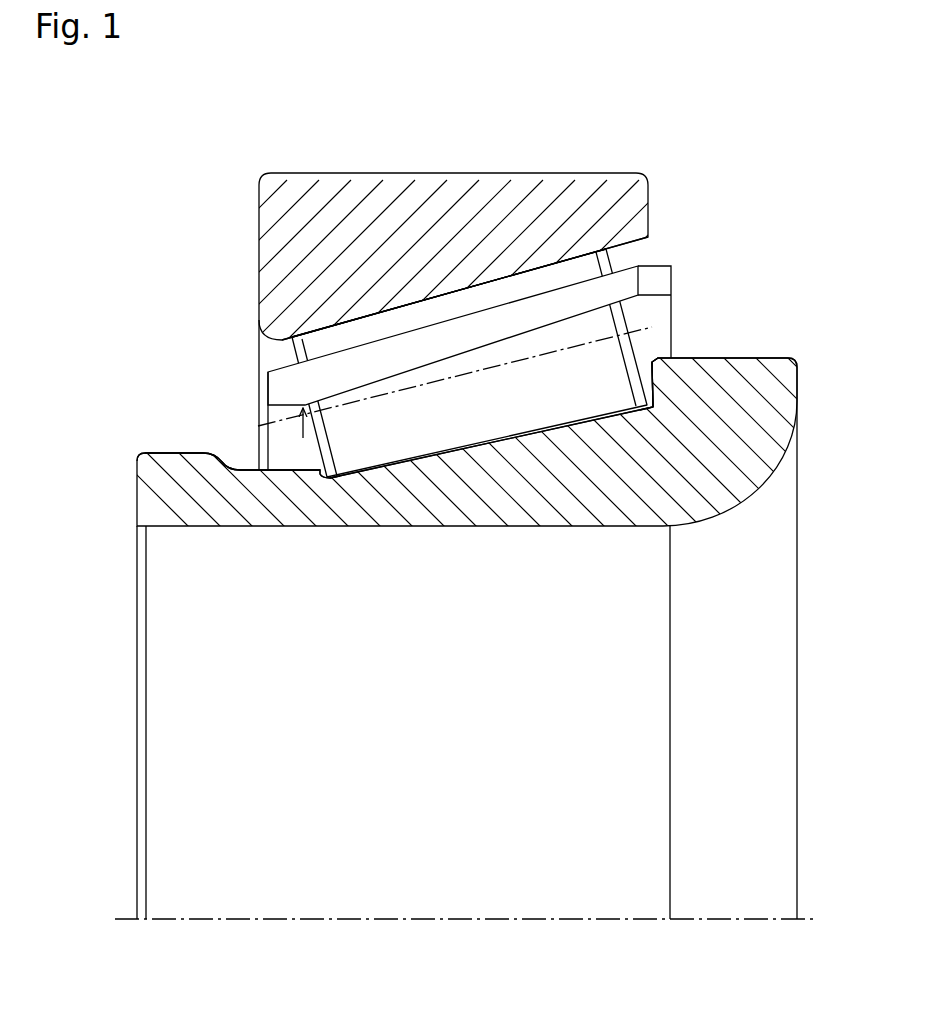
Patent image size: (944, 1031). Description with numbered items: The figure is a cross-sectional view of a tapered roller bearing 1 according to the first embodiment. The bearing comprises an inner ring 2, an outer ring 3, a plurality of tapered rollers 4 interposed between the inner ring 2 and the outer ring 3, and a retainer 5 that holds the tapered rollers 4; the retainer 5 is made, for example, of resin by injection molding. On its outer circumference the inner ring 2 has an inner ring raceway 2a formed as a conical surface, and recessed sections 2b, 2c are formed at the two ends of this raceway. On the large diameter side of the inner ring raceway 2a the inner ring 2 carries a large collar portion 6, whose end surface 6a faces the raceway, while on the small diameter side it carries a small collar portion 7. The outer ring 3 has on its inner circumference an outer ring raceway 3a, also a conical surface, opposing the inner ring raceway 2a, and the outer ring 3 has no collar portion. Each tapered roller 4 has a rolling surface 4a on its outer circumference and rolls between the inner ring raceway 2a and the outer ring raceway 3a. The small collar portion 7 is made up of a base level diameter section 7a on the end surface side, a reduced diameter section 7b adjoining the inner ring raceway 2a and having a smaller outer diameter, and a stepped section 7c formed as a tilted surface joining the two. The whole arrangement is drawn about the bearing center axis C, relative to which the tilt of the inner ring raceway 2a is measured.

The tapered roller bearing 1 is at (210, 290).
The inner ring 2 is at (730, 487).
The inner ring raceway 2a is at (495, 422).
The recessed section 2b is at (645, 420).
The recessed section 2c is at (322, 482).
The outer ring 3 is at (620, 183).
The outer ring raceway 3a is at (495, 290).
The tapered roller 4 is at (640, 335).
The rolling surface 4a is at (416, 305).
The retainer 5 is at (640, 280).
The large collar portion 6 is at (745, 372).
The end surface 6a is at (640, 360).
The small collar portion 7 is at (98, 322).
The base level diameter section 7a is at (170, 467).
The reduced diameter section 7b is at (292, 480).
The stepped section 7c is at (257, 470).
The bearing center axis C is at (720, 920).